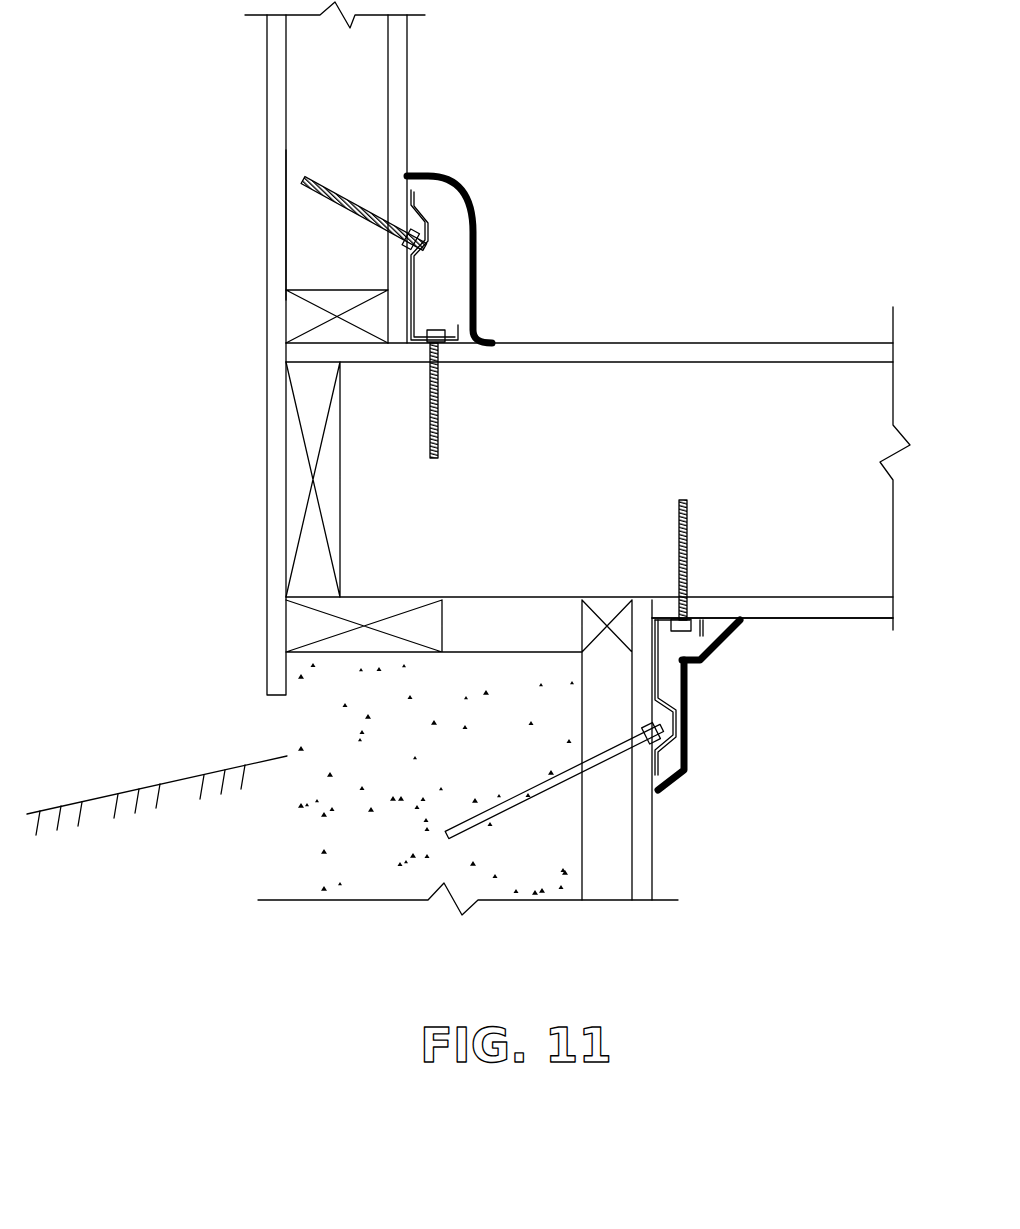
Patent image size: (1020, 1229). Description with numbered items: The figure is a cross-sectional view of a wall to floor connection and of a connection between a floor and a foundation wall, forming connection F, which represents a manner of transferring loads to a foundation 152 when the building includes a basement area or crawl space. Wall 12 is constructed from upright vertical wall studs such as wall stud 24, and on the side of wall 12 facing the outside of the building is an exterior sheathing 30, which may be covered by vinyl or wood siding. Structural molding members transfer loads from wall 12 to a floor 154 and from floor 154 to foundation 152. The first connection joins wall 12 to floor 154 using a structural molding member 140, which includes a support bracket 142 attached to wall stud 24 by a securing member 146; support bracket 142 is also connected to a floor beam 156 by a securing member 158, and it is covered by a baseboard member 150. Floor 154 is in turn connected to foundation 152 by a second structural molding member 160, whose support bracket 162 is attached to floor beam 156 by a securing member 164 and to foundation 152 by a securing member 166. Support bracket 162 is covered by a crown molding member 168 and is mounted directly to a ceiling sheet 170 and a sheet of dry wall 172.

The wall 12 is at (300, 68).
The exterior sheathing 30 is at (275, 162).
The wall stud 24 is at (395, 68).
The connection F is at (663, 112).
The structural molding member 140 is at (466, 190).
The securing member 146 is at (352, 200).
The baseboard member 150 is at (470, 210).
The support bracket 142 is at (411, 302).
The floor 154 is at (702, 372).
The securing member 158 is at (440, 410).
The floor beam 156 is at (598, 468).
The securing member 164 is at (688, 535).
The crown molding member 168 is at (718, 640).
The ceiling sheet 170 is at (858, 610).
The support bracket 162 is at (660, 690).
The structural molding member 160 is at (643, 694).
The sheet of dry wall 172 is at (640, 857).
The foundation 152 is at (297, 733).
The securing member 166 is at (490, 817).